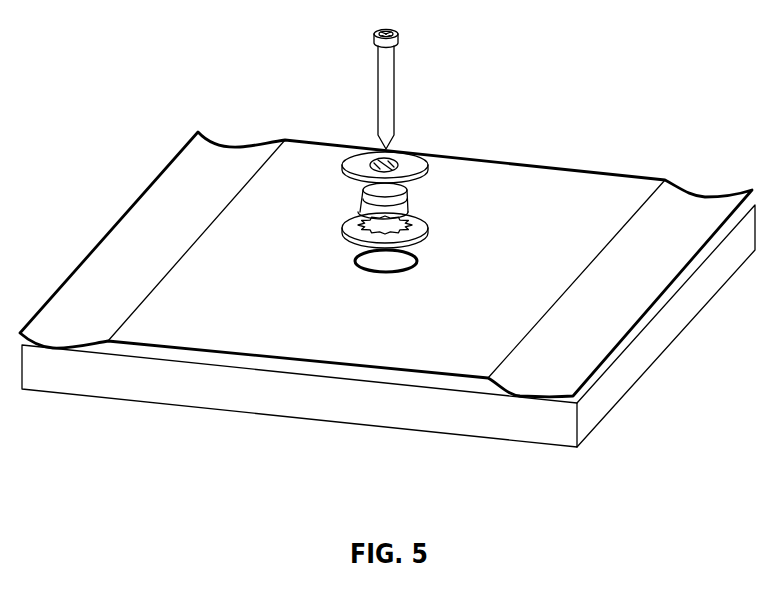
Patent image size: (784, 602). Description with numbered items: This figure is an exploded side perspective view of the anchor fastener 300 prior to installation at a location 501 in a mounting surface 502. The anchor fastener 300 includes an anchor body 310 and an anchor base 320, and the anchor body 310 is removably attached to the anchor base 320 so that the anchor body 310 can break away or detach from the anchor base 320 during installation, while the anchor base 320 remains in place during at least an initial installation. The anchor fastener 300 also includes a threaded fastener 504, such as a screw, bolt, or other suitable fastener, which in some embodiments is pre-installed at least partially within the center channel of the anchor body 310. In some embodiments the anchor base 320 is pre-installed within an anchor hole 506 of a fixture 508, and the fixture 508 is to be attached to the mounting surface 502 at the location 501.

The anchor fastener 300 is at (170, 48).
The mounting surface 502 is at (332, 408).
The fixture 508 is at (245, 342).
The location 501 is at (382, 285).
The anchor hole 506 is at (420, 260).
The anchor base 320 is at (425, 218).
The anchor body 310 is at (417, 195).
The threaded fastener 504 is at (397, 97).